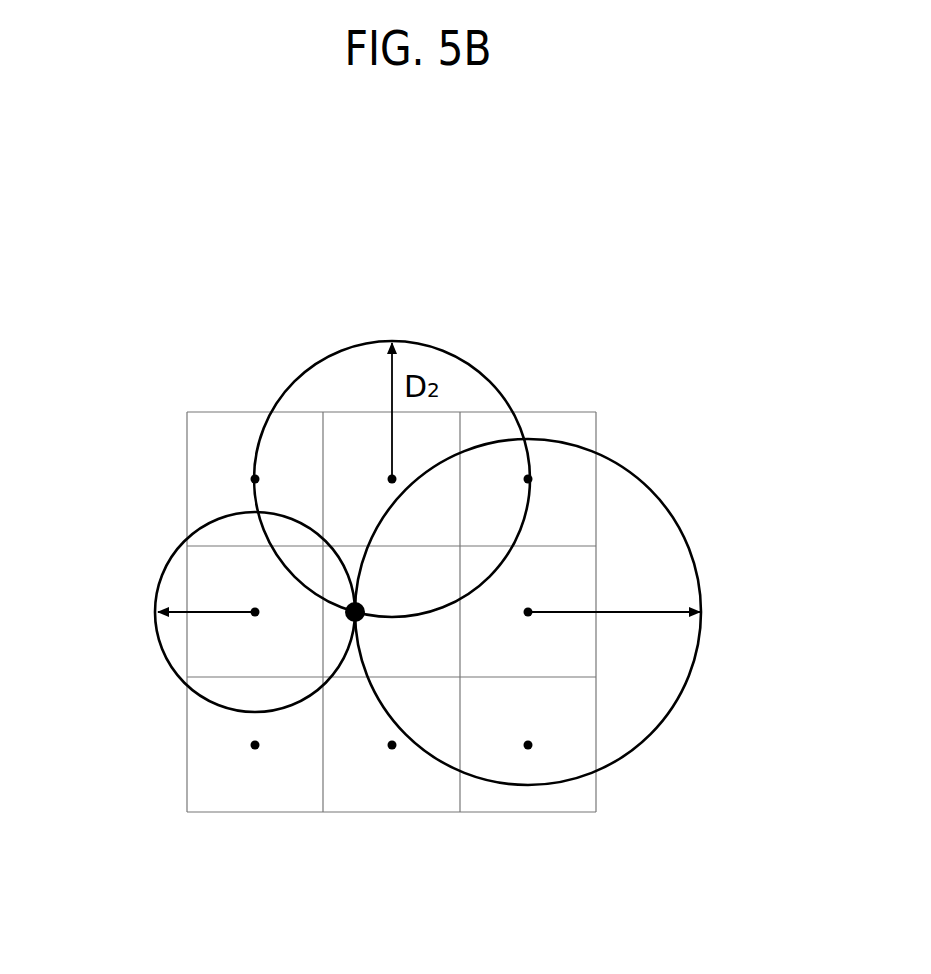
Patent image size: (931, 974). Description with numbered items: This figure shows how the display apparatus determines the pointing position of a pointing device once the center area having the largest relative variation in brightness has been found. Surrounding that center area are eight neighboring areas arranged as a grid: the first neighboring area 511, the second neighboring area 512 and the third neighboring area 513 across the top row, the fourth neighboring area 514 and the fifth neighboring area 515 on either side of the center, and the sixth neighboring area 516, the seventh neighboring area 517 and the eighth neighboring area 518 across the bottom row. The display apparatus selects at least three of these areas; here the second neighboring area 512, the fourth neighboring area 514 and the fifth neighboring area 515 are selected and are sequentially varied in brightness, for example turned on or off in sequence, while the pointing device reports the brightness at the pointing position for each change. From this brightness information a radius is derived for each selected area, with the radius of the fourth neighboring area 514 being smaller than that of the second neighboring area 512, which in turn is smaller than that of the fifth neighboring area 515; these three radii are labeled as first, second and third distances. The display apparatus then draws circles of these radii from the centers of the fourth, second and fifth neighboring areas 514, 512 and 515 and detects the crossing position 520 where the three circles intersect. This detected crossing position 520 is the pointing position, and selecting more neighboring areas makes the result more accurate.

The first neighboring area 511 is at (218, 423).
The second neighboring area 512 is at (353, 423).
The third neighboring area 513 is at (560, 423).
The fourth neighboring area 514 is at (207, 573).
The fifth neighboring area 515 is at (572, 573).
The sixth neighboring area 516 is at (223, 802).
The seventh neighboring area 517 is at (422, 802).
The eighth neighboring area 518 is at (548, 802).
The crossing position 520 is at (357, 622).